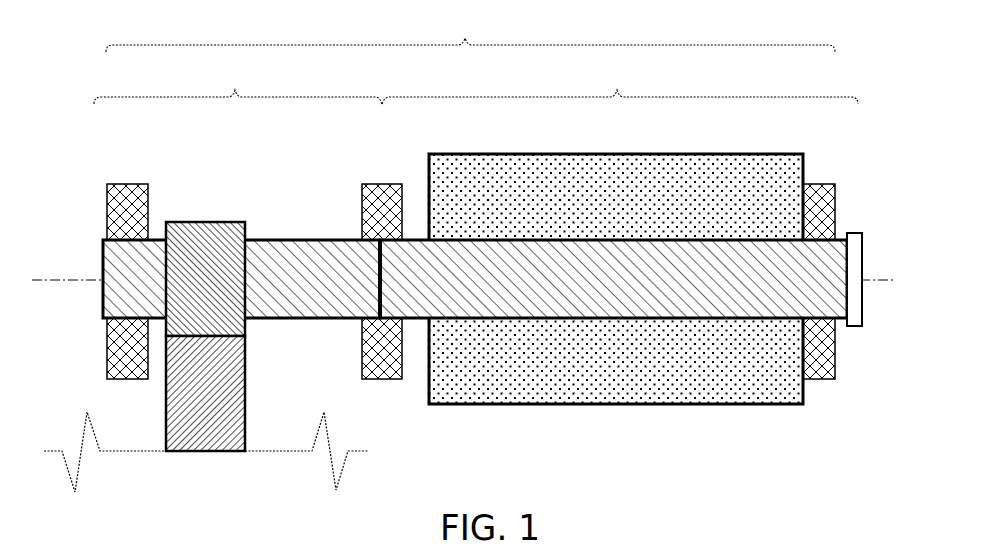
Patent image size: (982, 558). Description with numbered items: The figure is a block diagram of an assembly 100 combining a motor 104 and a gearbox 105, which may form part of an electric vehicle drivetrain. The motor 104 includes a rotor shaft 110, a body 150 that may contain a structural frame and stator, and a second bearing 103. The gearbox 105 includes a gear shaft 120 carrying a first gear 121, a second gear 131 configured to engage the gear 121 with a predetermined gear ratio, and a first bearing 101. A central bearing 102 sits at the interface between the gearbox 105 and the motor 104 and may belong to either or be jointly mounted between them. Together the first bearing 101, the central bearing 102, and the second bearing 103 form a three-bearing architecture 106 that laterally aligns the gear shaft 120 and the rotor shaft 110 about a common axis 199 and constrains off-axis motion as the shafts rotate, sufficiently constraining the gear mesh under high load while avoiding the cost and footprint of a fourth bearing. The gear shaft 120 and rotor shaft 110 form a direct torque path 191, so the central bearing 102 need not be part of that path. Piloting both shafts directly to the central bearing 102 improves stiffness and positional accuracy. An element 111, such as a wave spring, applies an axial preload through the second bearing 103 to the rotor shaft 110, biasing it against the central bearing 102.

The assembly 100 is at (72, 172).
The first bearing 101 is at (124, 184).
The central bearing 102 is at (379, 184).
The second bearing 103 is at (812, 184).
The motor 104 is at (620, 81).
The gearbox 105 is at (238, 81).
The three-bearing architecture 106 is at (470, 30).
The rotor shaft 110 is at (718, 288).
The element 111 is at (857, 233).
The gear shaft 120 is at (318, 288).
The gear 121 is at (229, 288).
The gear 131 is at (229, 408).
The body 150 is at (667, 215).
The torque path 191 is at (380, 292).
The axis 199 is at (40, 280).